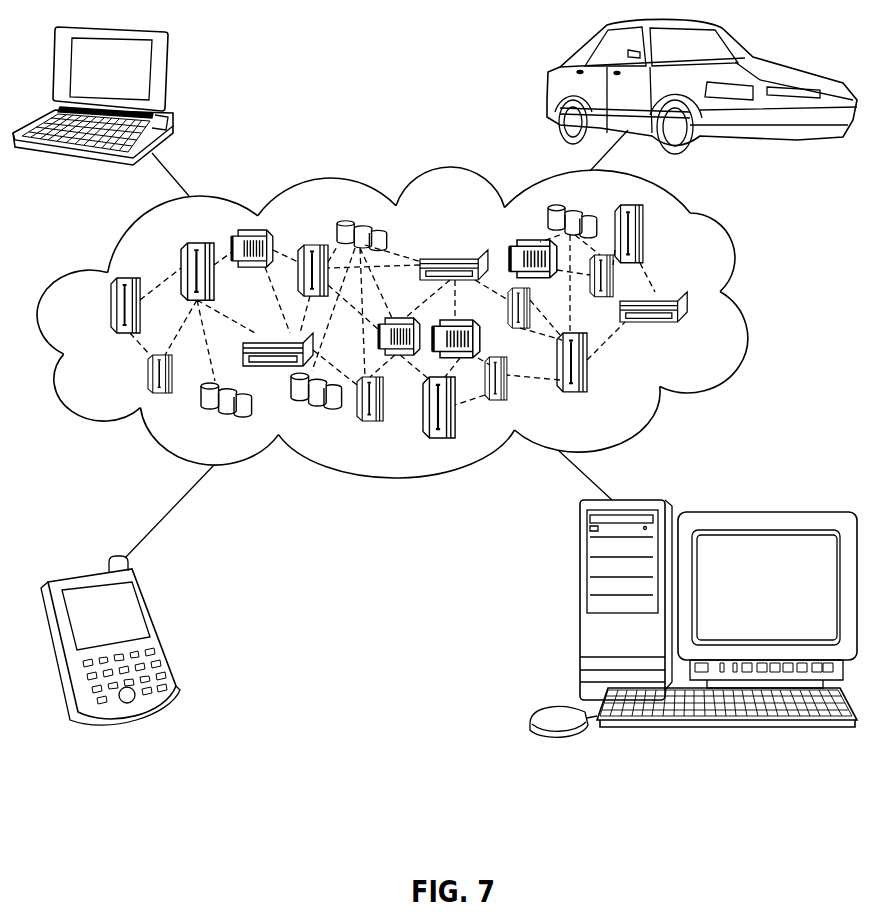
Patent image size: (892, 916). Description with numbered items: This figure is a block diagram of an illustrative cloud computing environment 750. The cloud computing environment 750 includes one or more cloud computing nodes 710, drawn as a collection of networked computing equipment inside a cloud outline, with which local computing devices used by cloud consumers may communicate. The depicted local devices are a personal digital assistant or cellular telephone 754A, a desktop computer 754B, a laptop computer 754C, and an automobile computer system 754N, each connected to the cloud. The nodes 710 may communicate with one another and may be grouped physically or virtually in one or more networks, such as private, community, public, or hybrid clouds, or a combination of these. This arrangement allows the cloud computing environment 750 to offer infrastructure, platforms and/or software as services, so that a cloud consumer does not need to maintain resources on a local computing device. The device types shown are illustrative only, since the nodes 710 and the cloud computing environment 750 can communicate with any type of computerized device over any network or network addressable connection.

The cloud computing environment 750 is at (733, 270).
The cloud computing nodes 710 is at (712, 326).
The personal digital assistant (PDA) or cellular telephone 754A is at (162, 628).
The desktop computer 754B is at (580, 606).
The laptop computer 754C is at (168, 73).
The automobile computer system 754N is at (553, 78).